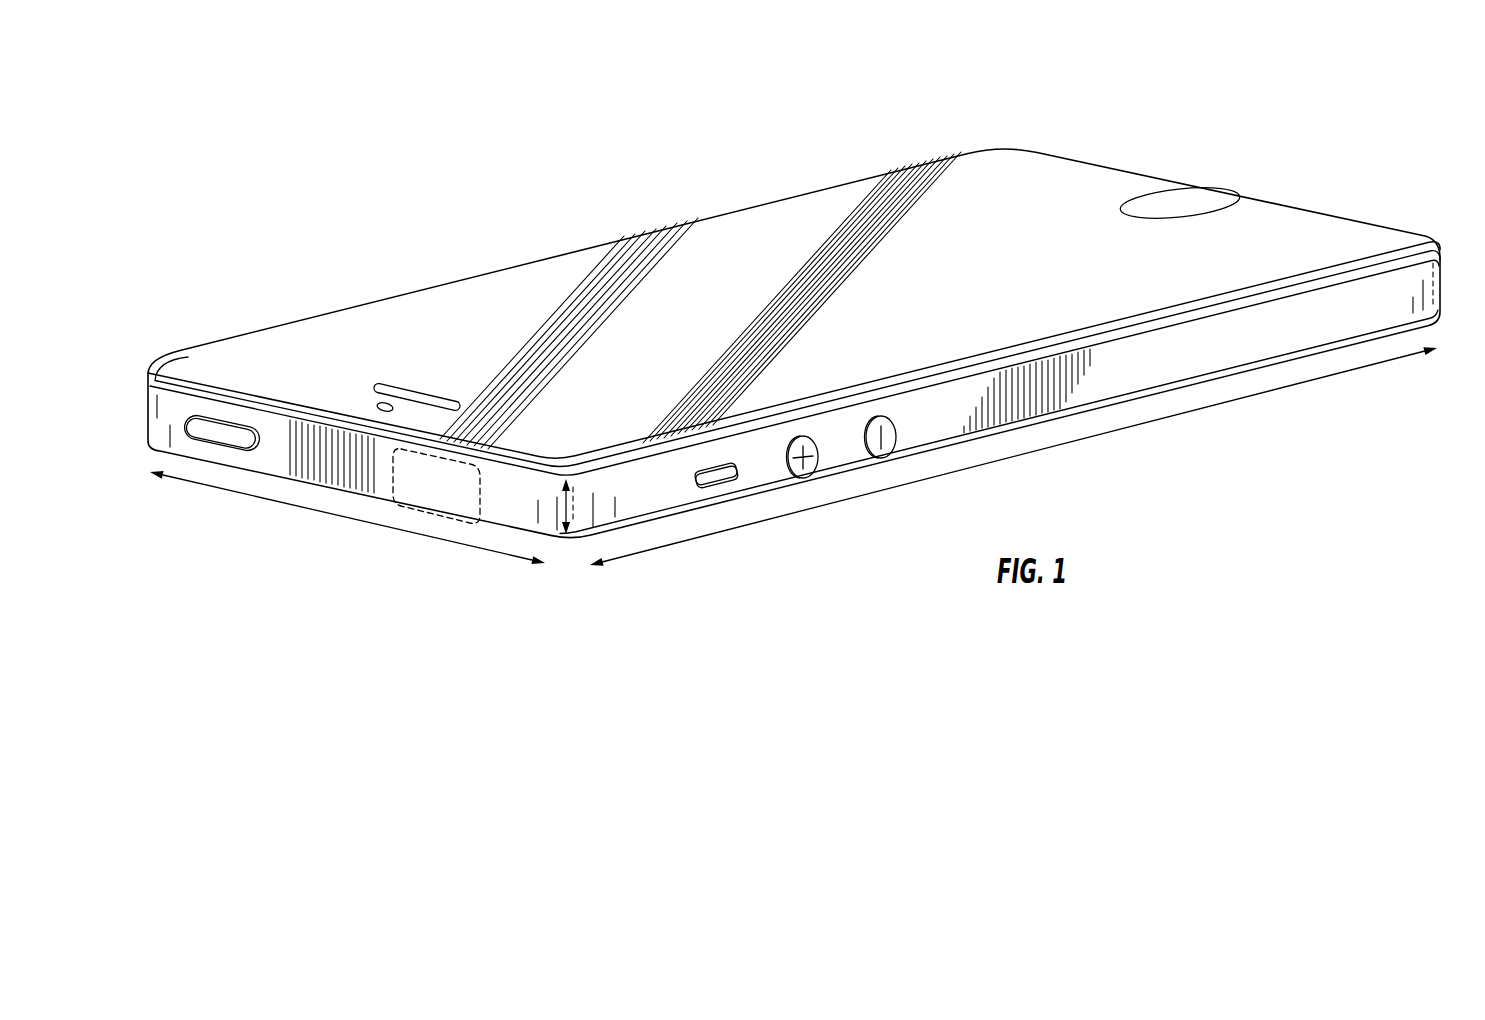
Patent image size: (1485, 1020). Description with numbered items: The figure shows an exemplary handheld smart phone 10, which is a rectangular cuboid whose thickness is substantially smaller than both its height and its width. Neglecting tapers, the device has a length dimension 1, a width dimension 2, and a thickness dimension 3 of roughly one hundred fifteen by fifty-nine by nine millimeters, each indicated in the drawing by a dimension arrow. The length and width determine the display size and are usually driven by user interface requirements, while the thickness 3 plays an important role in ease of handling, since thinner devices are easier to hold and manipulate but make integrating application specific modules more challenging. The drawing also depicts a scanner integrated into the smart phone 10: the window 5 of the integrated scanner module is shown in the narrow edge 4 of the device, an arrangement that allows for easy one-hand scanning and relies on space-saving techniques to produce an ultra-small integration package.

The smart phone 10 is at (333, 303).
The length dimension 1 is at (853, 497).
The width dimension 2 is at (253, 496).
The thickness dimension 3 is at (567, 509).
The narrow edge 4 is at (312, 455).
The window 5 is at (433, 485).